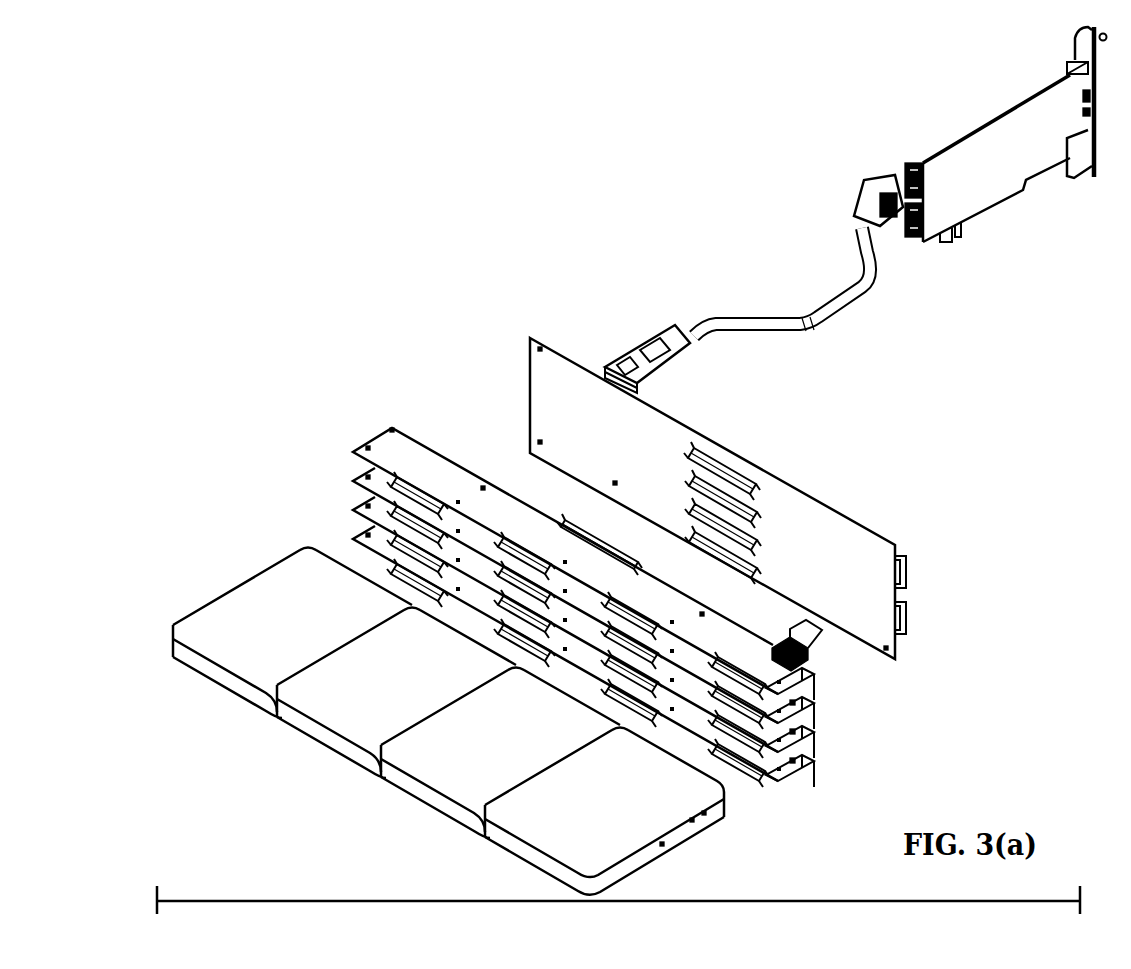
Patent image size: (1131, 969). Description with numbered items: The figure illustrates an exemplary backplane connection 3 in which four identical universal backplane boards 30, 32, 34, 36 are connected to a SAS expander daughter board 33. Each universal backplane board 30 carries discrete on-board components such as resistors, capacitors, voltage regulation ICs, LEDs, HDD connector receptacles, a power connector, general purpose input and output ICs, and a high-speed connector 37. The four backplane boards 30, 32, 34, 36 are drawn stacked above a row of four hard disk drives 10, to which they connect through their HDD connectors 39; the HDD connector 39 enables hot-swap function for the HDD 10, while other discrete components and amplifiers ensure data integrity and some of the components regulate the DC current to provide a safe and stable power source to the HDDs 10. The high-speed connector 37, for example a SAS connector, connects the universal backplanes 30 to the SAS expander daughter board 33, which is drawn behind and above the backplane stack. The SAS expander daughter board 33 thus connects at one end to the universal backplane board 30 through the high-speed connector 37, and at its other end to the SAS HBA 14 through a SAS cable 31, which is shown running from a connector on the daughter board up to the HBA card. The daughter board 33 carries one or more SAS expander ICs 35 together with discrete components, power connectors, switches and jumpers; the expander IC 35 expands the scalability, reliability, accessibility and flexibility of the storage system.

The backplane connection 3 is at (618, 907).
The hard disk drive 10 is at (505, 852).
The SAS HBA 14 is at (968, 135).
The universal backplane board 30 is at (367, 447).
The SAS cable 31 is at (797, 325).
The universal backplane board 32 is at (353, 478).
The SAS expander daughter board 33 is at (832, 508).
The universal backplane board 34 is at (353, 508).
The SAS expander IC 35 is at (762, 530).
The universal backplane board 36 is at (353, 537).
The high-speed connector 37 is at (593, 523).
The HDD connector 39 is at (778, 742).